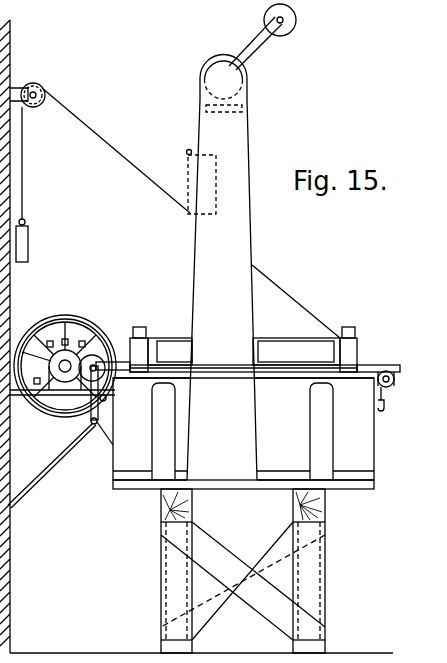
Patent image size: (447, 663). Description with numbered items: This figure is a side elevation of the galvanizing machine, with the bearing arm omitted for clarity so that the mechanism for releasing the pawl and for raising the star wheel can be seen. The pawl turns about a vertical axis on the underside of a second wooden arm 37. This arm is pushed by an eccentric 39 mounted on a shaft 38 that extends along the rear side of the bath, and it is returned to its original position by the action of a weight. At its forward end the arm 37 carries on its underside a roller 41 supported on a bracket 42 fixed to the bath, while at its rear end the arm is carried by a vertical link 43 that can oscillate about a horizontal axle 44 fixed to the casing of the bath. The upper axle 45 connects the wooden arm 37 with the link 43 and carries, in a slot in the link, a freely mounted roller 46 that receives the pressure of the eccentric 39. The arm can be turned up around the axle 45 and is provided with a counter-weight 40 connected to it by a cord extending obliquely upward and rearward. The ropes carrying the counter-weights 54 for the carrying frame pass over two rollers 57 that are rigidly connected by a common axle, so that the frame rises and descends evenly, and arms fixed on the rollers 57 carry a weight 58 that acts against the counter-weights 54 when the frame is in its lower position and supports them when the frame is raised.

The second wooden arm 37 is at (370, 365).
The shaft 38 is at (66, 363).
The eccentric 39 is at (60, 374).
The counter-weight 40 is at (28, 240).
The roller 41 is at (378, 386).
The bracket 42 is at (382, 402).
The vertical link 43 is at (103, 398).
The horizontal axle 44 is at (94, 424).
The upper axle 45 is at (126, 360).
The freely mounted roller 46 is at (96, 357).
The counter-weights 54 is at (189, 168).
The rollers 57 is at (250, 81).
The weight 58 is at (292, 30).